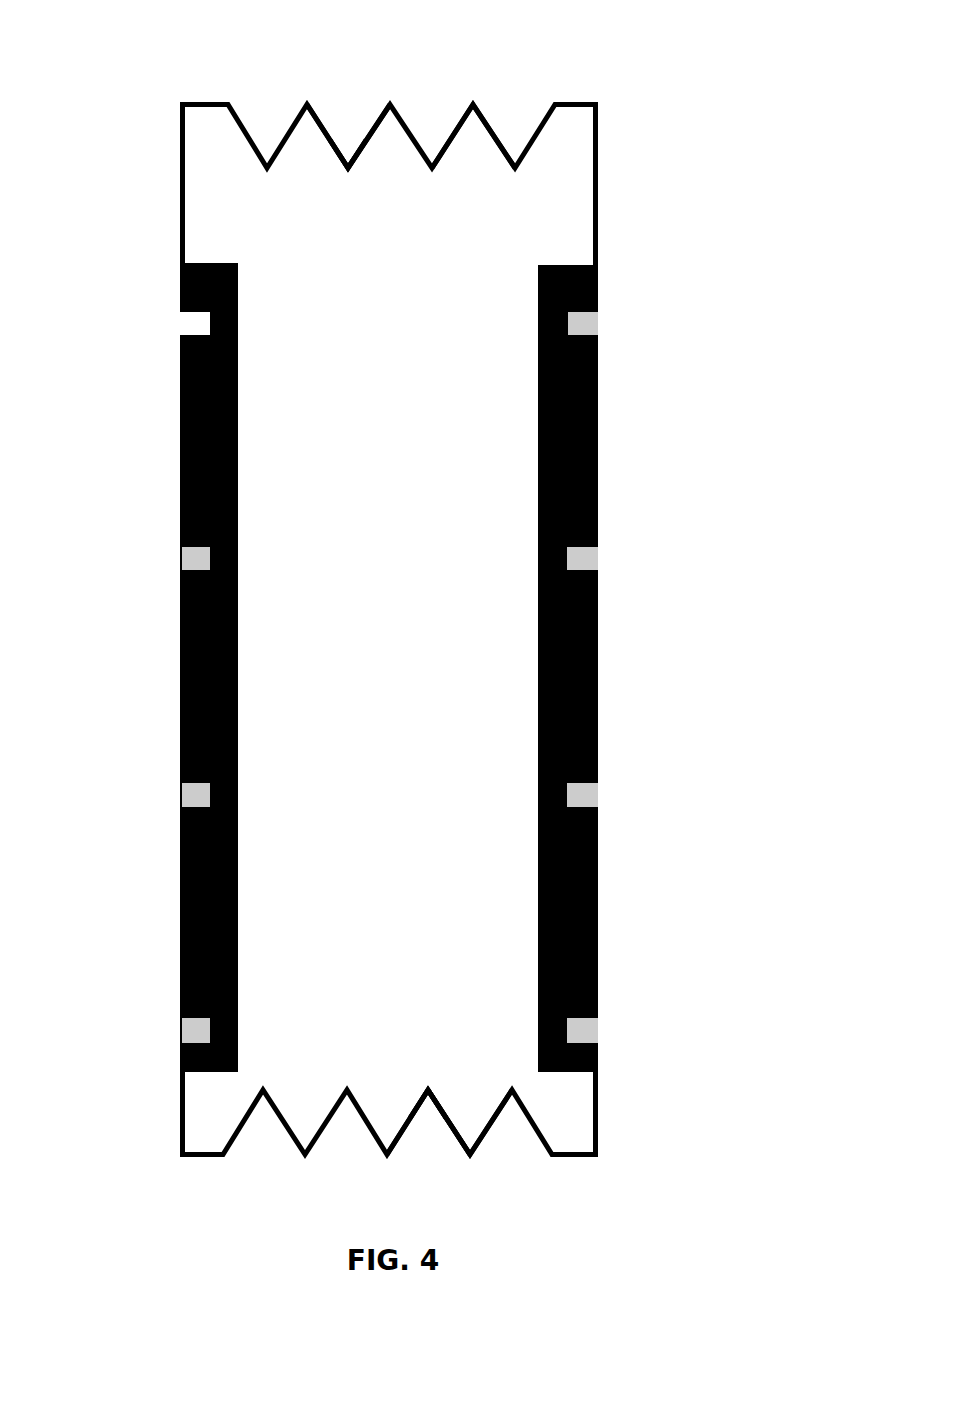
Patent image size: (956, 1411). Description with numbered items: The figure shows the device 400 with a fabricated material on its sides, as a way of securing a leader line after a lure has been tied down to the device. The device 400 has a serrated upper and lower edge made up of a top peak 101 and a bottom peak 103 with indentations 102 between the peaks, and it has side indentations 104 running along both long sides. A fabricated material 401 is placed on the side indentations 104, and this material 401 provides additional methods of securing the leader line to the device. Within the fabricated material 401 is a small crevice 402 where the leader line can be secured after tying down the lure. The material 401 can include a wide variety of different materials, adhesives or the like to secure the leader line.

The device 400 is at (717, 88).
The fabricated material 401 is at (529, 283).
The small crevice 402 is at (593, 318).
The side indentations 104 is at (190, 328).
The top peak 101 is at (476, 103).
The indentations 102 is at (355, 138).
The bottom peak 103 is at (350, 170).